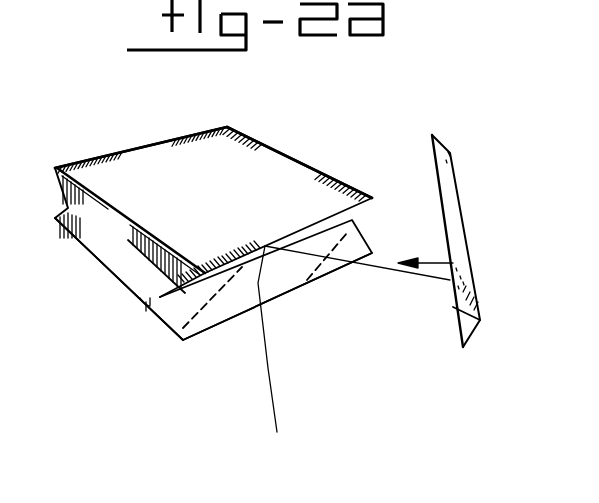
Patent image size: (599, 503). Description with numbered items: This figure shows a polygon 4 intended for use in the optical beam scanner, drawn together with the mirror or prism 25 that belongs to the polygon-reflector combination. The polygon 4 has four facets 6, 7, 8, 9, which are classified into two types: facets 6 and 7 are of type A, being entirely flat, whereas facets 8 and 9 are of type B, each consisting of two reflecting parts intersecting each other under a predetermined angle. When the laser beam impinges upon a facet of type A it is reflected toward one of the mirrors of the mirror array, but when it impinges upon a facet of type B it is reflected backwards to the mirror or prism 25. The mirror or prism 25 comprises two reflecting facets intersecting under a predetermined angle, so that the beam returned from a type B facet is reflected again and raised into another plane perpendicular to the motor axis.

The rotating polygon 4 is at (222, 126).
The facet 6 is at (97, 248).
The facet 7 is at (318, 175).
The facet 8 is at (205, 314).
The facet 9 is at (150, 142).
The mirror or prism 25 is at (450, 175).
The facet type A is at (145, 300).
The facet type B is at (320, 272).